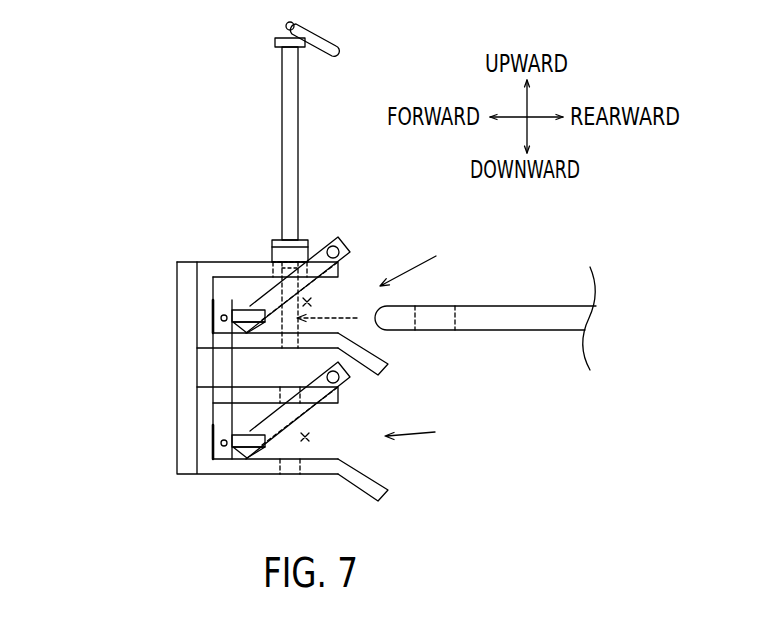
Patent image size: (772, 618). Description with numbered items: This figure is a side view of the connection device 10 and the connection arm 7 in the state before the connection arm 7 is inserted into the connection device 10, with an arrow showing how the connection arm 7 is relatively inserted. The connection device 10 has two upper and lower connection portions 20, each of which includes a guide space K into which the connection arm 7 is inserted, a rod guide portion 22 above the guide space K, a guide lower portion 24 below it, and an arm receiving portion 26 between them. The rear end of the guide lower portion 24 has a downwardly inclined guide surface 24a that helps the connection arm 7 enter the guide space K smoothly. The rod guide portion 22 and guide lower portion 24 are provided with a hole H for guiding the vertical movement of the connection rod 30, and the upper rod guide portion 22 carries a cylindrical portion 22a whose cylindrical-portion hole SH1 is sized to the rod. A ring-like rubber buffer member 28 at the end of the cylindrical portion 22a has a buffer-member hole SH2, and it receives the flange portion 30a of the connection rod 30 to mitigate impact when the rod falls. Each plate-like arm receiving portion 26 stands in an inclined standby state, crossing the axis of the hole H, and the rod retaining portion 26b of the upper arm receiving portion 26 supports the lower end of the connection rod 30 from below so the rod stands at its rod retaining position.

The connection arm 7 is at (534, 312).
The connection device 10 is at (126, 197).
The connection portion 20 is at (422, 346).
The rod guide portion 22 is at (218, 253).
The cylindrical portion 22a is at (262, 262).
The guide lower portion 24 is at (350, 343).
The guide surface 24a is at (385, 370).
The arm receiving portion 26 is at (313, 282).
The rod retaining portion 26b is at (268, 296).
The buffer member 28 is at (278, 247).
The connection rod 30 is at (307, 112).
The flange portion 30a is at (275, 42).
The hole H is at (266, 266).
The guide space K is at (308, 302).
The cylindrical-portion hole SH1 is at (305, 267).
The buffer-member hole SH2 is at (300, 262).